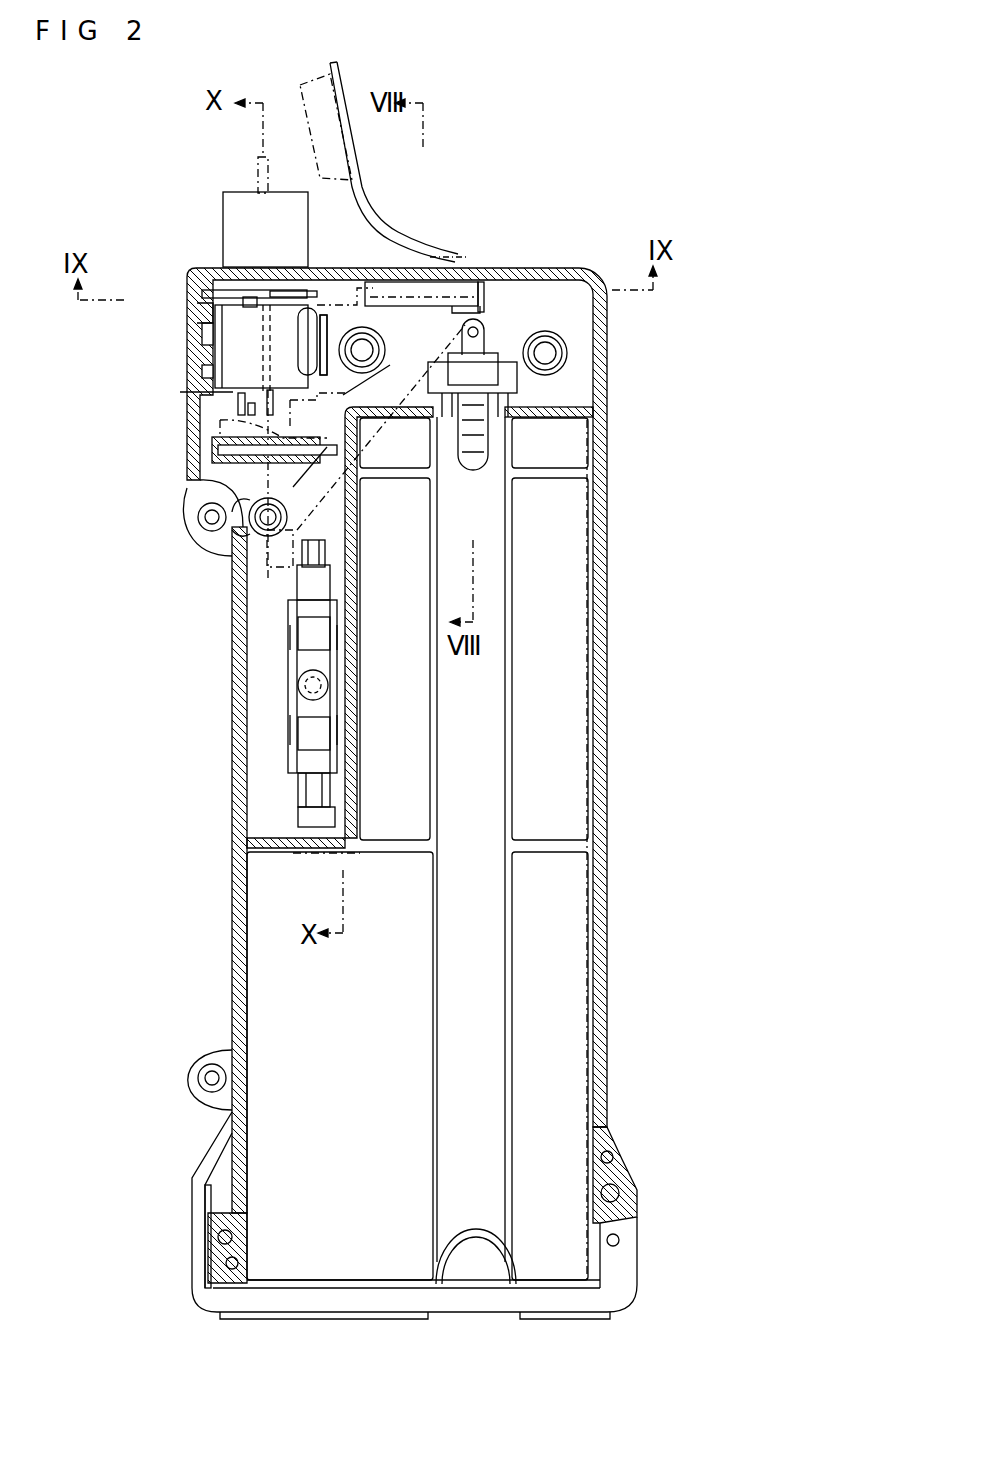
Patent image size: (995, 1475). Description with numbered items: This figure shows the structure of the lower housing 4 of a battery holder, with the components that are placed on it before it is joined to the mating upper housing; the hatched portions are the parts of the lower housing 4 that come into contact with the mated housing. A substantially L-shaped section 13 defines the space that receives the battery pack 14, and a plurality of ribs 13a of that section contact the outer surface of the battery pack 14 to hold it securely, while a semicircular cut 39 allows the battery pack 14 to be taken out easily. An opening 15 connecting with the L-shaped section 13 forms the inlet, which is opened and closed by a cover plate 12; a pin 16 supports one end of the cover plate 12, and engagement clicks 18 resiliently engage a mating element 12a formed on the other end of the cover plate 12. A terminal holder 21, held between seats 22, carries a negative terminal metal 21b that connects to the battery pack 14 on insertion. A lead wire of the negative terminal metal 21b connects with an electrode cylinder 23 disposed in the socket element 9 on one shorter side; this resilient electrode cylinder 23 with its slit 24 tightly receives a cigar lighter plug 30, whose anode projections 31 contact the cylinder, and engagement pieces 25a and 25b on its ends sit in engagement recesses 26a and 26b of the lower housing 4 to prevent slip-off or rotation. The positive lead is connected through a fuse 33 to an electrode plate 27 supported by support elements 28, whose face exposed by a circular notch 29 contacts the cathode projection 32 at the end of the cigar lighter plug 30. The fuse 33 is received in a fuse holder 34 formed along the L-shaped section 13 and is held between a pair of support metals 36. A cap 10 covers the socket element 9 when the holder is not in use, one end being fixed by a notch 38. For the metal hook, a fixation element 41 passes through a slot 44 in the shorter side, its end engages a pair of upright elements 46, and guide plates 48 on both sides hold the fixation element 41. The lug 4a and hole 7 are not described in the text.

The lower housing 4 is at (607, 440).
The mounting lug 4a is at (225, 556).
The screw hole 7 is at (200, 532).
The socket element 9 is at (310, 268).
The cap 10 is at (356, 172).
The cover plate 12 is at (590, 1300).
The mating element 12a is at (200, 1243).
The substantially L-shaped section 13 is at (548, 647).
The rib 13a is at (513, 712).
The battery pack 14 is at (590, 549).
The opening 15 is at (355, 1288).
The pin 16 is at (618, 1238).
The engagement click 18 is at (205, 1222).
The terminal holder 21 is at (490, 378).
The negative terminal metal 21b is at (478, 453).
The seat 22 is at (510, 388).
The electrode cylinder 23 is at (205, 318).
The slit 24 is at (200, 337).
The engagement piece 25a is at (217, 282).
The engagement piece 25b is at (240, 400).
The engagement recess 26a is at (250, 300).
The engagement recess 26b is at (235, 440).
The electrode plate 27 is at (250, 500).
The support element 28 is at (352, 425).
The circular notch 29 is at (235, 465).
The cigar lighter plug 30 is at (222, 205).
The anode projection 31 is at (205, 368).
The cathode projection 32 is at (215, 450).
The fuse 33 is at (305, 690).
The fuse holder 34 is at (290, 665).
The support metal 36 is at (298, 628).
The notch 38 is at (472, 282).
The semicircular cut 39 is at (475, 1282).
The fixation element 41 is at (470, 288).
The slot 44 is at (372, 322).
The upright element 46 is at (413, 280).
The guide plate 48 is at (377, 280).